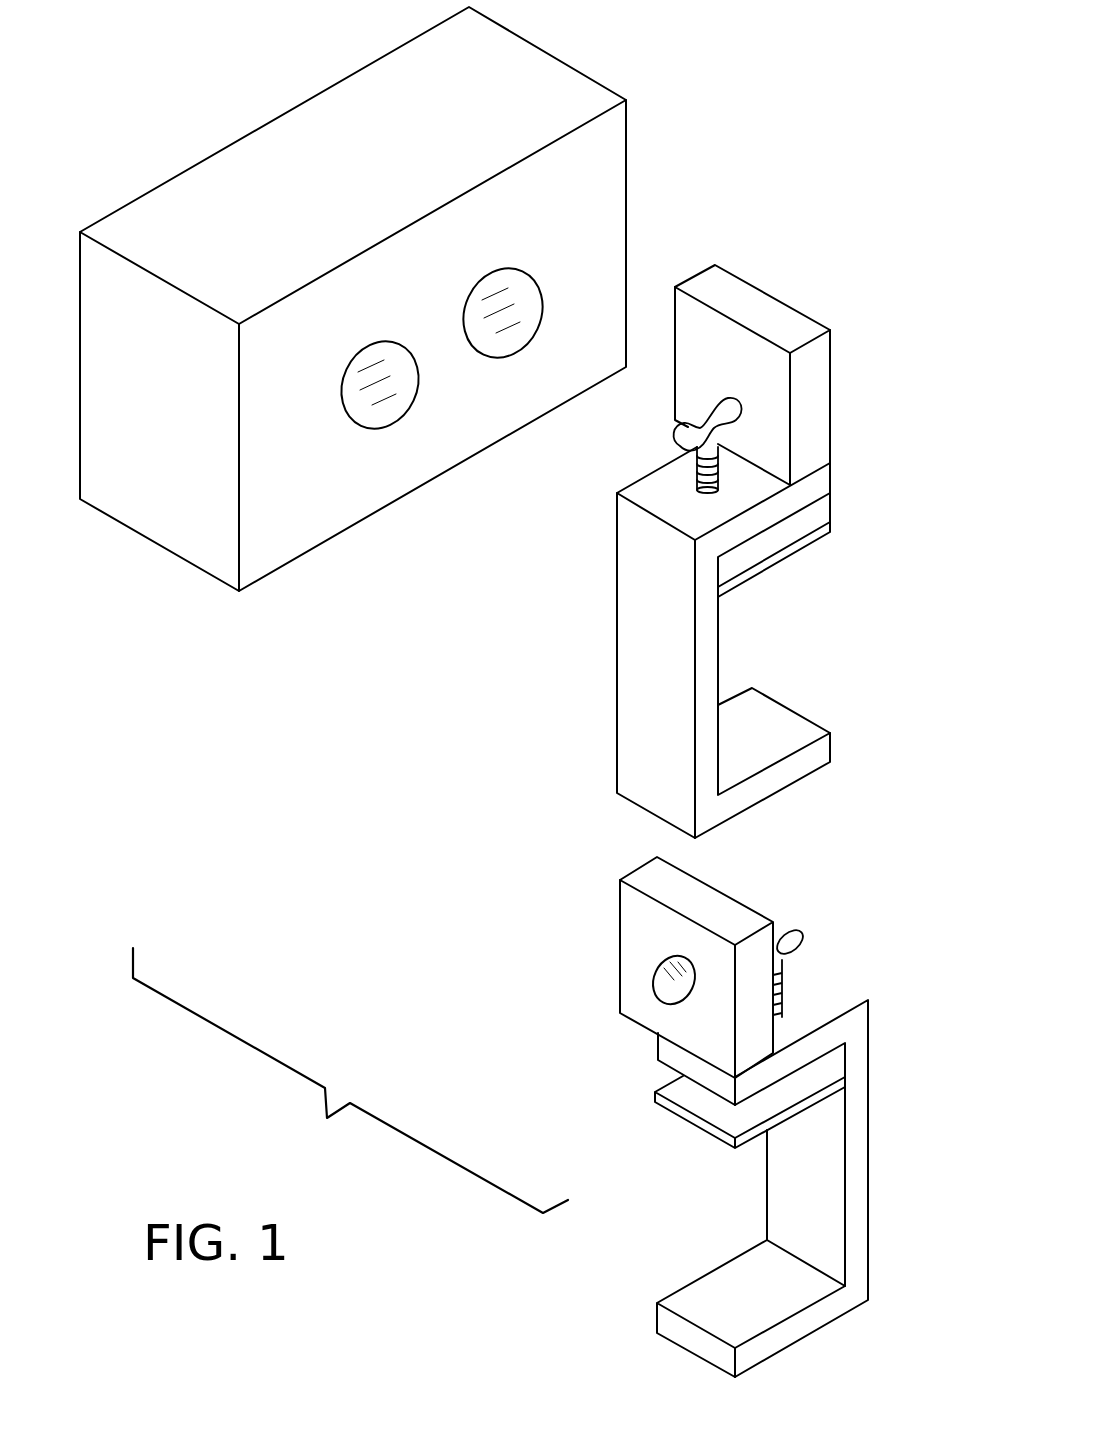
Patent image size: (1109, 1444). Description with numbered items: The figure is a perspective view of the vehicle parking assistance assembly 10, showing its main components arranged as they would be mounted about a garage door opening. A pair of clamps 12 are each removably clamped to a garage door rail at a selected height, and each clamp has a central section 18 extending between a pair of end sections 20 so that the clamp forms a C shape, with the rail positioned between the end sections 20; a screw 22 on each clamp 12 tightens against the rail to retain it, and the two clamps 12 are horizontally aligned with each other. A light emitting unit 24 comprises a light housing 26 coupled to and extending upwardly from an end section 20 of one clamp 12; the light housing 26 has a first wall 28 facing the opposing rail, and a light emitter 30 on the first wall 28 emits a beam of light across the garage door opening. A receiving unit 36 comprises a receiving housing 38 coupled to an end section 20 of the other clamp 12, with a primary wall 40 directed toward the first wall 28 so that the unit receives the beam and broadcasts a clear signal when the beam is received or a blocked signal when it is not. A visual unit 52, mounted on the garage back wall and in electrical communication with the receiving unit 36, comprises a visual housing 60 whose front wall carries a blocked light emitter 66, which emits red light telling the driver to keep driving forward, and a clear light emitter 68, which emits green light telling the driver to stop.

The vehicle parking assistance assembly 10 is at (710, 713).
The clamps 12 is at (734, 887).
The central section 18 is at (643, 690).
The end sections 20 is at (654, 490).
The screw 22 is at (712, 468).
The light emitting unit 24 is at (606, 992).
The light housing 26 is at (629, 992).
The first wall 28 is at (645, 960).
The light emitter 30 is at (662, 993).
The receiving unit 36 is at (806, 340).
The receiving housing 38 is at (783, 248).
The primary wall 40 is at (830, 405).
The visual unit 52 is at (422, 320).
The visual housing 60 is at (404, 320).
The blocked light emitter 66 is at (387, 428).
The clear light emitter 68 is at (520, 274).